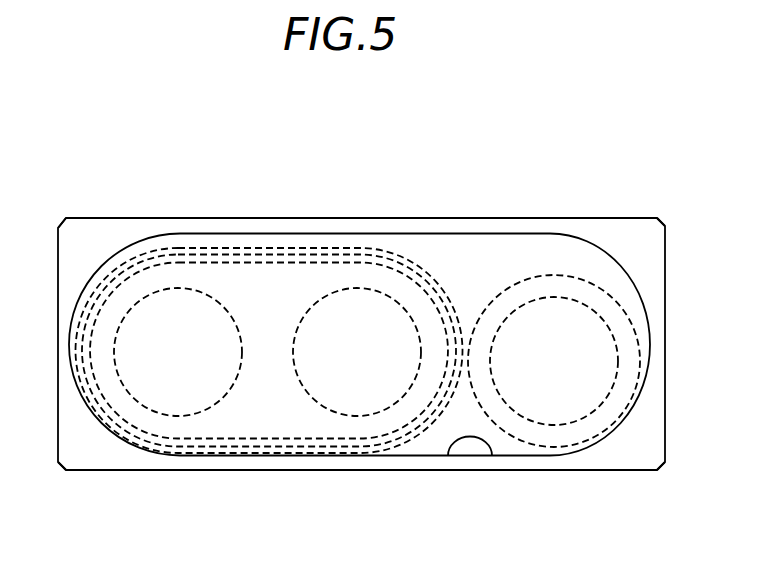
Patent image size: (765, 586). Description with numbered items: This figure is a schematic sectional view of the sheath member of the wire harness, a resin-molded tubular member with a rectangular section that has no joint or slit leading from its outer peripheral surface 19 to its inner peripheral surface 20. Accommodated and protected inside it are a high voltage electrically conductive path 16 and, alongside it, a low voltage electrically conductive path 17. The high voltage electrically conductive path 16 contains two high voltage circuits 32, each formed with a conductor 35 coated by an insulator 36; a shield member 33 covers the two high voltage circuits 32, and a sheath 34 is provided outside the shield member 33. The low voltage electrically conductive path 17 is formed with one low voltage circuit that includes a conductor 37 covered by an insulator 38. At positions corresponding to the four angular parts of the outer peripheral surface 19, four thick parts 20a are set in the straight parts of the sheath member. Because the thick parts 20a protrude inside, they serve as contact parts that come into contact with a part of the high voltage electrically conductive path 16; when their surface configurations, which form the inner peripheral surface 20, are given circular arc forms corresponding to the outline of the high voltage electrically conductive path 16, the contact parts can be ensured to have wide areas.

The high voltage electrically conductive path 16 is at (432, 265).
The low voltage electrically conductive path 17 is at (554, 302).
The outer peripheral surface 19 is at (205, 470).
The inner peripheral surface 20 is at (447, 458).
The thick part 20a is at (88, 240).
The high voltage circuit 32 is at (269, 325).
The shield member 33 is at (225, 255).
The sheath 34 is at (140, 248).
The conductor 35 is at (323, 320).
The insulator 36 is at (377, 280).
The conductor 37 is at (563, 320).
The insulator 38 is at (613, 283).